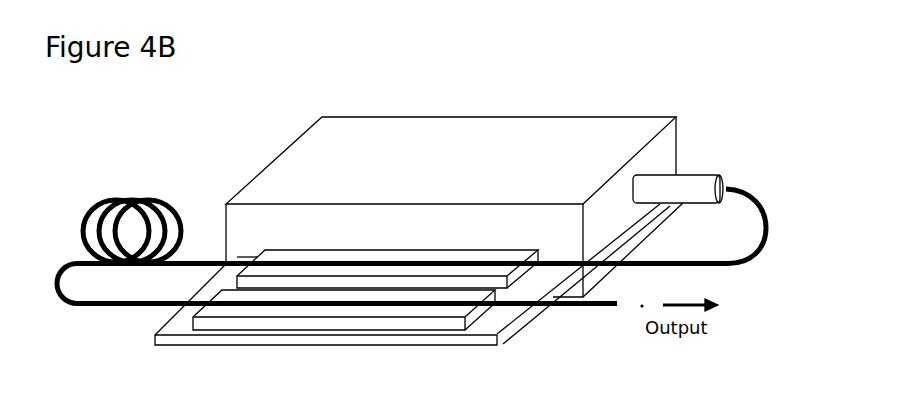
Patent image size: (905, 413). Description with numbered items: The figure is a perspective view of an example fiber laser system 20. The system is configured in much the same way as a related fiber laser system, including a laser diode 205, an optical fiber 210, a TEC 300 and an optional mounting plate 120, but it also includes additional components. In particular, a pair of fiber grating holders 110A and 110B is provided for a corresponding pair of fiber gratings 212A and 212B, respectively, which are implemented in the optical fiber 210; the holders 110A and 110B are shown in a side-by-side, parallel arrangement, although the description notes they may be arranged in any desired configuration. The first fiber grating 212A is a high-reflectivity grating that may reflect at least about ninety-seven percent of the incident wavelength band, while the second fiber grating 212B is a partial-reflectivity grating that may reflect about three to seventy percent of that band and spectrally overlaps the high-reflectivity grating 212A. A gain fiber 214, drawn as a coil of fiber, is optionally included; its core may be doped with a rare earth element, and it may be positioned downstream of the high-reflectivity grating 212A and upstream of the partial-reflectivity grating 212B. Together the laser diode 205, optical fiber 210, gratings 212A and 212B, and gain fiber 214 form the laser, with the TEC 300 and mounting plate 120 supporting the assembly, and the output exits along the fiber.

The fiber laser system 20 is at (696, 67).
The laser diode 205 is at (597, 135).
The mounting plate 120 is at (490, 322).
The TEC 300 is at (660, 215).
The fiber grating holder 110A is at (285, 283).
The fiber grating holder 110B is at (230, 322).
The gain fiber 214 is at (155, 193).
The optical fiber 210 is at (753, 204).
The high-reflectivity grating 212A is at (393, 268).
The partial-reflectivity grating 212B is at (340, 308).